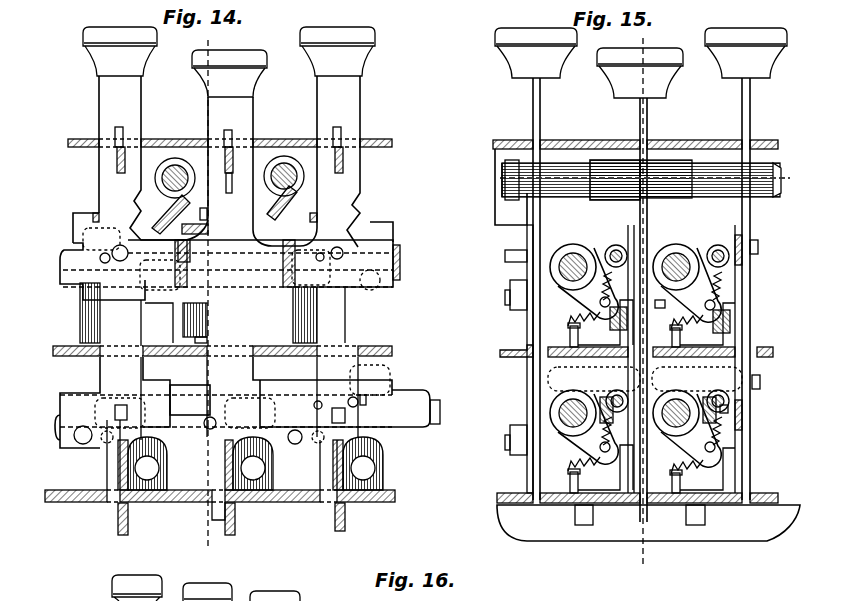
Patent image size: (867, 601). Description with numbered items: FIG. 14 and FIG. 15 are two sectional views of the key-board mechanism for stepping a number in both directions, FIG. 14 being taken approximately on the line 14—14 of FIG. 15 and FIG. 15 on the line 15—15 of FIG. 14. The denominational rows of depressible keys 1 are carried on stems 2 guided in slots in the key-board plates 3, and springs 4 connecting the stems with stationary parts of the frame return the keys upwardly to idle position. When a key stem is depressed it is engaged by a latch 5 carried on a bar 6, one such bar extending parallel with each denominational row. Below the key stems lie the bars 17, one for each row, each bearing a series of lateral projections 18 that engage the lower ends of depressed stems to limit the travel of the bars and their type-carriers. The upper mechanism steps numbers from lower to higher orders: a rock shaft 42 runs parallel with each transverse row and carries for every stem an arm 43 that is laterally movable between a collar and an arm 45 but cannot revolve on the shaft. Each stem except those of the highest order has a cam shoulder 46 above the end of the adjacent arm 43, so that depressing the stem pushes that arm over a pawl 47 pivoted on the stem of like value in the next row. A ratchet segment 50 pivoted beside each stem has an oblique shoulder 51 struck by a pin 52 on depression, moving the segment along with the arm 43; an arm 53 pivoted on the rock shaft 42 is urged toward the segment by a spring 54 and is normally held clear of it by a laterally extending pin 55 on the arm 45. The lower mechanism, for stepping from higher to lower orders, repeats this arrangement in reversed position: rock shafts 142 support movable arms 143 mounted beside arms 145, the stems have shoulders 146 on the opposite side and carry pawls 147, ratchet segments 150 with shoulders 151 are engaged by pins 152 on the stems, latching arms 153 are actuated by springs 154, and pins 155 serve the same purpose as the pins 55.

In FIG. 14, the depressible keys 1 is at (325, 62).
In FIG. 15, the depressible keys 1 is at (550, 60).
In FIG. 14, the key stems 2 is at (322, 112).
In FIG. 15, the key stems 2 is at (640, 120).
In FIG. 14, the key-board plates 3 is at (170, 139).
In FIG. 15, the key-board plates 3 is at (705, 140).
In FIG. 15, the springs 4 is at (690, 212).
In FIG. 14, the latches 5 is at (224, 211).
In FIG. 15, the latches 5 is at (513, 212).
In FIG. 14, the bars 6 is at (176, 172).
In FIG. 15, the bars 6 is at (512, 180).
In FIG. 15, the depending arms 14 is at (620, 38).
In FIG. 14, the shaft 15 is at (245, 38).
In FIG. 14, the bars 17 is at (130, 527).
In FIG. 15, the bars 17 is at (776, 536).
In FIG. 15, the lateral projections 18 is at (584, 526).
In FIG. 14, the rock shaft 42 is at (400, 262).
In FIG. 15, the rock shaft 42 is at (552, 260).
In FIG. 14, the arms 43 is at (180, 222).
In FIG. 15, the arms 43 is at (700, 216).
In FIG. 15, the arms 45 is at (722, 263).
In FIG. 14, the cam shoulder 46 is at (343, 232).
In FIG. 15, the cam shoulder 46 is at (527, 243).
In FIG. 14, the pawl 47 is at (207, 305).
In FIG. 14, the ratchet segment 50 is at (207, 214).
In FIG. 15, the ratchet segment 50 is at (758, 245).
In FIG. 14, the oblique shoulders 51 is at (80, 318).
In FIG. 14, the pins 52 is at (73, 287).
In FIG. 15, the pins 52 is at (495, 303).
In FIG. 14, the arms 53 is at (98, 213).
In FIG. 15, the arms 53 is at (612, 236).
In FIG. 15, the springs 54 is at (682, 327).
In FIG. 15, the pins 55 is at (687, 265).
In FIG. 14, the rock shafts 142 is at (437, 408).
In FIG. 15, the rock shafts 142 is at (537, 445).
In FIG. 15, the movable arms 143 is at (730, 360).
In FIG. 14, the arms 145 is at (180, 390).
In FIG. 14, the shoulders 146 is at (381, 377).
In FIG. 14, the pawls 147 is at (65, 432).
In FIG. 14, the ratchet segments 150 is at (270, 455).
In FIG. 15, the ratchet segments 150 is at (560, 398).
In FIG. 14, the shoulders 151 is at (362, 400).
In FIG. 15, the shoulders 151 is at (728, 407).
In FIG. 14, the pins 152 is at (366, 398).
In FIG. 15, the pins 152 is at (745, 376).
In FIG. 14, the arms 153 is at (194, 338).
In FIG. 15, the arms 153 is at (692, 438).
In FIG. 15, the springs 154 is at (651, 469).
In FIG. 14, the pins 155 is at (173, 395).
In FIG. 15, the pins 155 is at (540, 448).